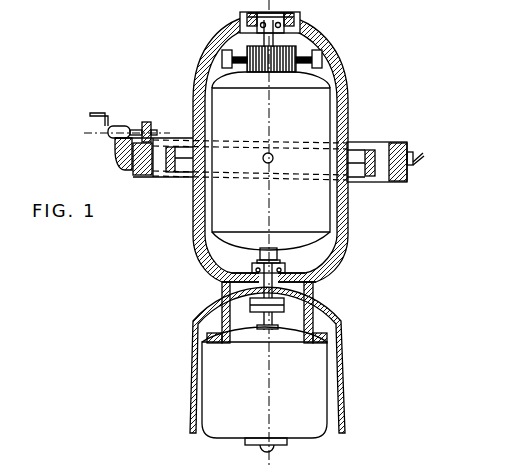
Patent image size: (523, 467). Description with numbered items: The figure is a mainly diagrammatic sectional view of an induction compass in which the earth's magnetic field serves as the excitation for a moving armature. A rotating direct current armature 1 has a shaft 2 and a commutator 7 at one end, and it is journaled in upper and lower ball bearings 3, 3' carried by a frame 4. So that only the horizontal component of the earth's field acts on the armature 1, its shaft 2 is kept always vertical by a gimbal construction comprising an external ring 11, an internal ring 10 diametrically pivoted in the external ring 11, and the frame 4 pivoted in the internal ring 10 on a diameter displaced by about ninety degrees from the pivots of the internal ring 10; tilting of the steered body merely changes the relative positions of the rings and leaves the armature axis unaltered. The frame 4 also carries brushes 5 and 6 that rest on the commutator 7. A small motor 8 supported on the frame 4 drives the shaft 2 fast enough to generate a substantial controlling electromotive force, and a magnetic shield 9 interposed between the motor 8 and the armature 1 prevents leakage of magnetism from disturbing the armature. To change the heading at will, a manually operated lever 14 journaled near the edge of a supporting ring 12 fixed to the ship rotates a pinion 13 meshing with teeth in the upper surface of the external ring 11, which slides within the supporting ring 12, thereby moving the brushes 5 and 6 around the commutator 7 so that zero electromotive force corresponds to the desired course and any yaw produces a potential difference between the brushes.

The armature 1 is at (307, 117).
The shaft 2 is at (313, 273).
The upper ball bearing 3 is at (304, 29).
The lower ball bearing 3' is at (222, 289).
The frame 4 is at (341, 68).
The brush 5 is at (228, 58).
The brush 6 is at (321, 65).
The commutator 7 is at (250, 65).
The motor 8 is at (306, 388).
The magnetic shield 9 is at (339, 327).
The internal ring 10 is at (370, 176).
The external ring 11 is at (403, 147).
The supporting ring 12 is at (407, 182).
The pinion 13 is at (152, 131).
The manually operated lever 14 is at (106, 114).